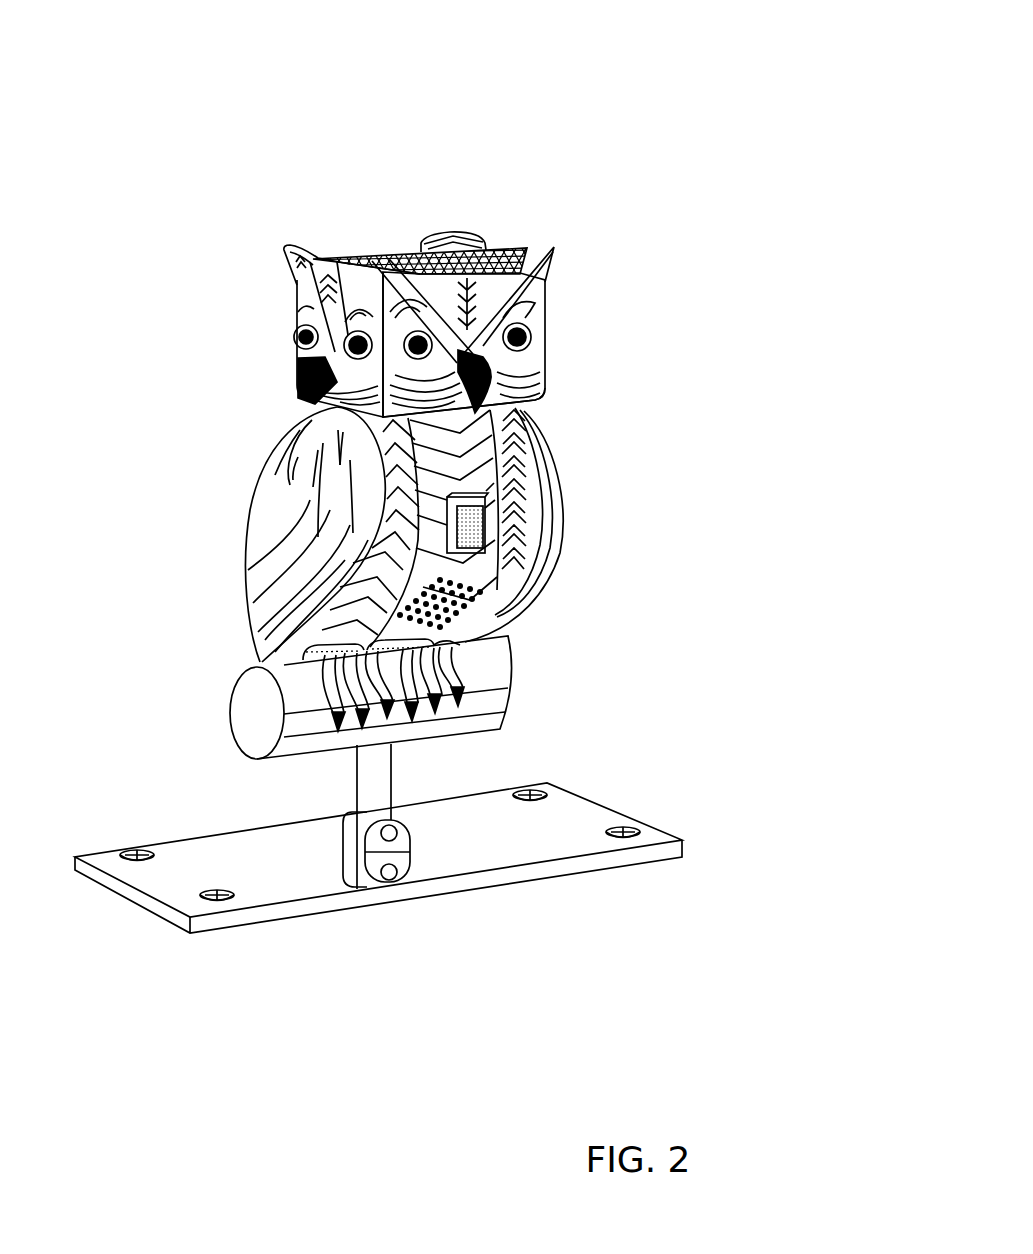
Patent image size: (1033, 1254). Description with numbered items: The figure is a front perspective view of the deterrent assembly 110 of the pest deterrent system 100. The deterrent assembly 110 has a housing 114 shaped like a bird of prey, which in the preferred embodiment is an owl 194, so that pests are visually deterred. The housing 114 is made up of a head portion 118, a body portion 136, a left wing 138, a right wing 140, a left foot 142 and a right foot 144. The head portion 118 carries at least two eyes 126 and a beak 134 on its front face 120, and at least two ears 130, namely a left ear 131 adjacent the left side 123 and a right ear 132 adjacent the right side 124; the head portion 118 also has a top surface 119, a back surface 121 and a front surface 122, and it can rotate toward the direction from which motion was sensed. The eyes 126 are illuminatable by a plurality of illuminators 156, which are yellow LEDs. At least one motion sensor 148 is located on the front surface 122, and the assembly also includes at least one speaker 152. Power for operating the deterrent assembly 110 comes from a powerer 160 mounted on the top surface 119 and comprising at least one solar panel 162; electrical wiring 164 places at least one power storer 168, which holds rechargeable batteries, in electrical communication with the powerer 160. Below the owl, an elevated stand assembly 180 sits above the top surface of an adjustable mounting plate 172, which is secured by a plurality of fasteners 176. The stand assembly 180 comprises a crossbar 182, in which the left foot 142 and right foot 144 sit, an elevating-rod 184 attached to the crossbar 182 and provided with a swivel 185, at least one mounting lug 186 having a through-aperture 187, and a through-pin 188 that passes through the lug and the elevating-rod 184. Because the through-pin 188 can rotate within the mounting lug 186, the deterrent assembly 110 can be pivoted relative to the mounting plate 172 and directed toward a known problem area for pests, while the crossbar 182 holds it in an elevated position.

The pest deterrent system 100 is at (613, 76).
The deterrent assembly 110 is at (675, 95).
The housing 114 is at (514, 457).
The head portion 118 is at (408, 287).
The top surface 119 is at (495, 253).
The front face 120 is at (544, 360).
The back surface 121 is at (323, 253).
The front surface 122 is at (535, 377).
The left side 123 is at (291, 288).
The right side 124 is at (546, 393).
The eyes 126 is at (527, 320).
The ears 130 is at (562, 262).
The left ear 131 is at (281, 242).
The right ear 132 is at (556, 246).
The beak 134 is at (496, 395).
The body portion 136 is at (387, 503).
The left wing 138 is at (558, 474).
The right wing 140 is at (238, 552).
The left foot 142 is at (457, 651).
The right foot 144 is at (318, 685).
The motion sensor 148 is at (490, 522).
The speaker 152 is at (470, 603).
The illuminators 156 is at (405, 346).
The powerer 160 is at (415, 249).
The solar panel 162 is at (400, 255).
The electrical wiring 164 is at (481, 479).
The power storer 168 is at (360, 316).
The adjustable mounting plate 172 is at (544, 838).
The fasteners 176 is at (123, 848).
The elevated stand assembly 180 is at (225, 771).
The crossbar 182 is at (518, 672).
The elevating-rod 184 is at (396, 777).
The swivel 185 is at (365, 838).
The mounting lug 186 is at (403, 865).
The through-aperture 187 is at (400, 834).
The through-pin 188 is at (388, 883).
The owl 194 is at (255, 458).